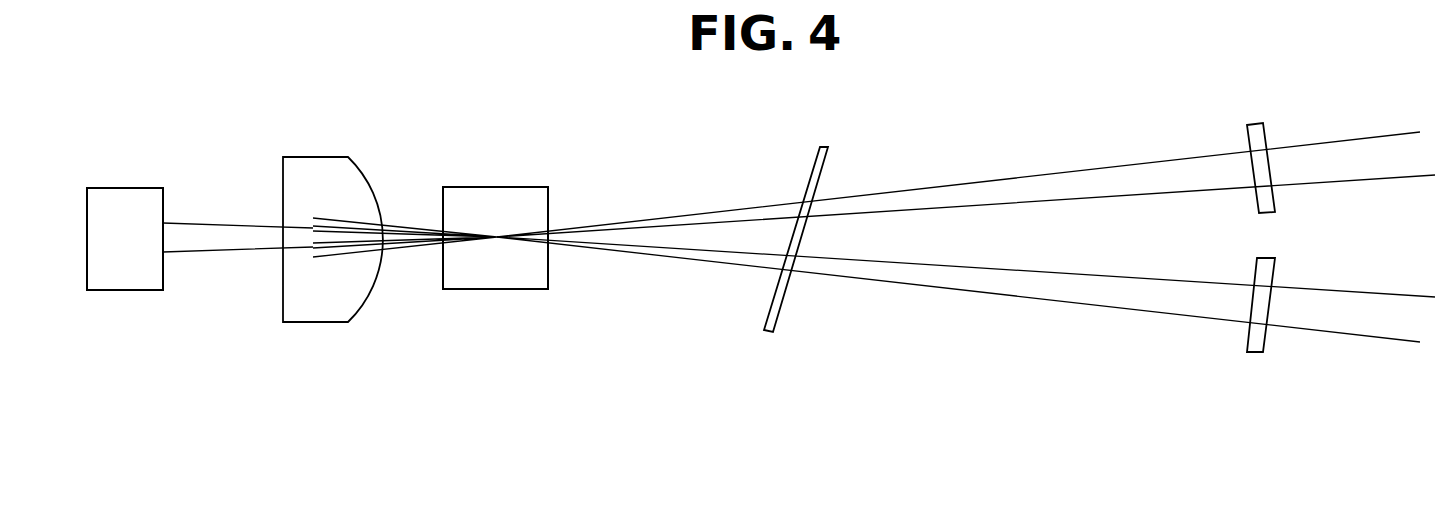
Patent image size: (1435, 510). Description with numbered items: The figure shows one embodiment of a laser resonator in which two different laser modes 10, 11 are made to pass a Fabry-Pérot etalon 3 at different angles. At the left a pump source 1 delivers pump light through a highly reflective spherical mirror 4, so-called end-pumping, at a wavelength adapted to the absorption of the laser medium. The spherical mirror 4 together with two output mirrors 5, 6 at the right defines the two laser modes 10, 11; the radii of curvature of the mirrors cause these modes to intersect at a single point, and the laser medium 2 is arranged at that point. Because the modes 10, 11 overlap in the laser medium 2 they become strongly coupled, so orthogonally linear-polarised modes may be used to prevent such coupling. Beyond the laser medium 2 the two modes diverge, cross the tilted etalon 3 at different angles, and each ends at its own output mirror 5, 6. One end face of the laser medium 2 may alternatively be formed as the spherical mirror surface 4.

The pump source 1 is at (127, 188).
The highly reflective spherical mirror 4 is at (283, 172).
The laser medium 2 is at (480, 190).
The Fabry-Pérot etalon 3 is at (815, 172).
The laser mode 10 is at (1110, 177).
The laser mode 11 is at (1108, 297).
The output mirror 5 is at (1263, 137).
The output mirror 6 is at (1263, 340).